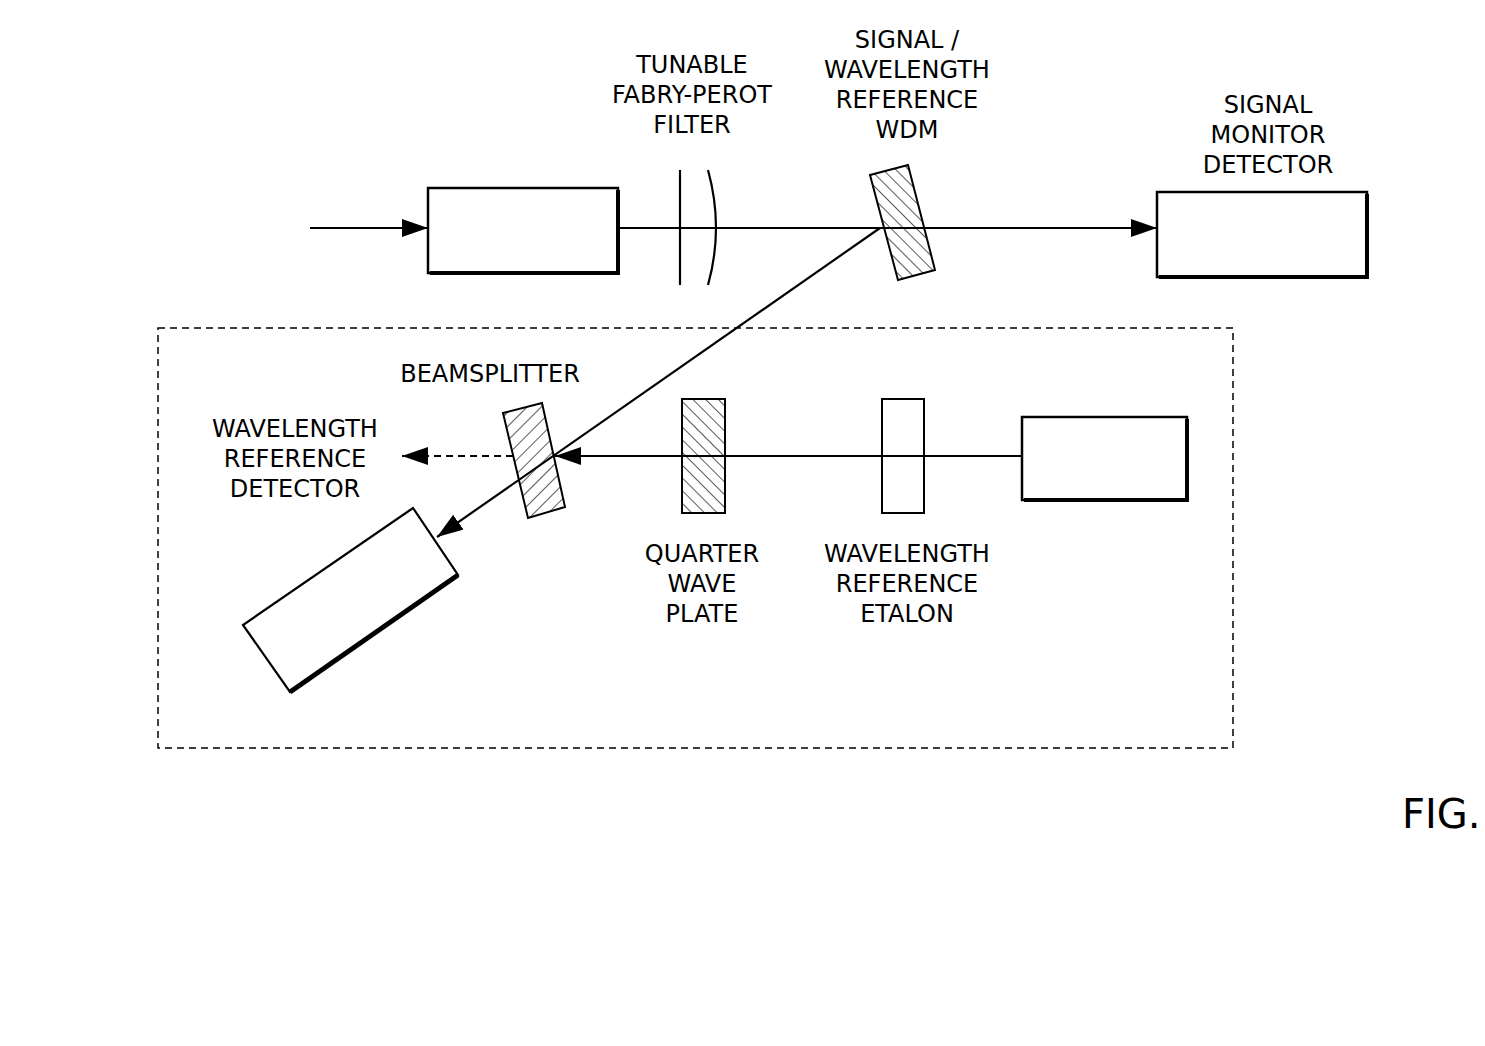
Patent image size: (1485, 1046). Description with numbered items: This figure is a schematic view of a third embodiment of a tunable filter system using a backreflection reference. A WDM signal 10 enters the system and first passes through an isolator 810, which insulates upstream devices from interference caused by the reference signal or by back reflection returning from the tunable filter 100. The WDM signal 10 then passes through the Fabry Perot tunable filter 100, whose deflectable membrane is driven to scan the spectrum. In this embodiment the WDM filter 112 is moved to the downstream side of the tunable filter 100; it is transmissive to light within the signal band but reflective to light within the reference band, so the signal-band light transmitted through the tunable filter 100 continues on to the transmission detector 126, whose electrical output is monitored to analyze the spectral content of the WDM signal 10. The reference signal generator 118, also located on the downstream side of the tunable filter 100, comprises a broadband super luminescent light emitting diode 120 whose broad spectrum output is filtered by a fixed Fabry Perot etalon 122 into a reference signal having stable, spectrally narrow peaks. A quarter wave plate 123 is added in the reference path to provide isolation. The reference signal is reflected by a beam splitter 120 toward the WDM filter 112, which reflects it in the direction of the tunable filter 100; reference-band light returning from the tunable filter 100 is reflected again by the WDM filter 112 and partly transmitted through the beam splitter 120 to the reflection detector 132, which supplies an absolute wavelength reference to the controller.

The WDM signal 10 is at (319, 228).
The isolator 810 is at (488, 187).
The tunable filter 100 is at (717, 205).
The WDM filter 112 is at (918, 203).
The transmission detector 126 is at (1372, 210).
The reference signal generator 118 is at (312, 327).
The super luminescent light emitting diode (SLED) 120 is at (537, 519).
The quarter wave plate 123 is at (708, 398).
The fixed Fabry Perot etalon/filter 122 is at (904, 398).
The reflection detector 132 is at (437, 597).